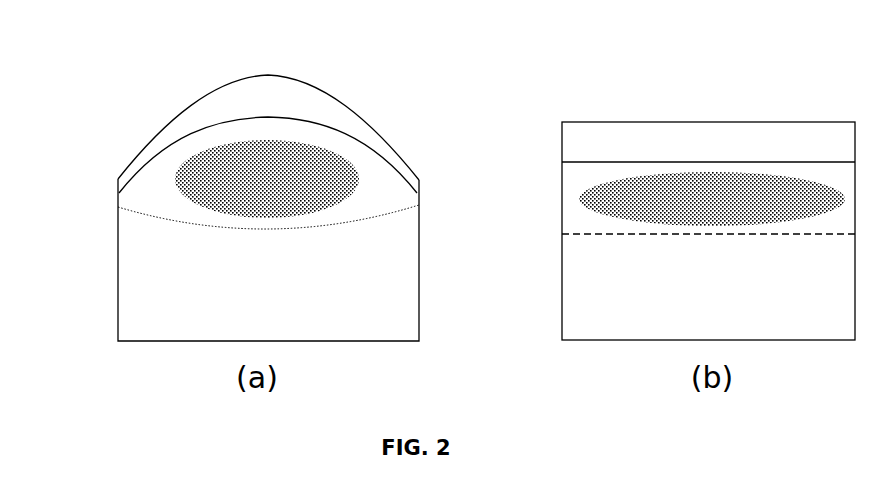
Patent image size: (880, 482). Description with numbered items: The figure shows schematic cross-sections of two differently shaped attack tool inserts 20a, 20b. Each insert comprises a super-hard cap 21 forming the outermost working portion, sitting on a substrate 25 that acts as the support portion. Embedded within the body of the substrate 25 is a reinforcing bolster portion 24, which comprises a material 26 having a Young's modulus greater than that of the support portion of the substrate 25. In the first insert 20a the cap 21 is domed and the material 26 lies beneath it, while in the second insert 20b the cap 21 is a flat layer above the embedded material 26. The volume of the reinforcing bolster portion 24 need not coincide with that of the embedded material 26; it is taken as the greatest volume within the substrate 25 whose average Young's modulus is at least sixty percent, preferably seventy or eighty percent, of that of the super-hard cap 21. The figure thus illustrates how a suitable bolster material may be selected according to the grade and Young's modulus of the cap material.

The attack tool insert 20a is at (320, 61).
The attack tool insert 20b is at (727, 72).
The super-hard cap 21 is at (486, 134).
The reinforcing bolster portion 24 is at (564, 195).
The substrate 25 is at (486, 260).
The material 26 is at (510, 183).